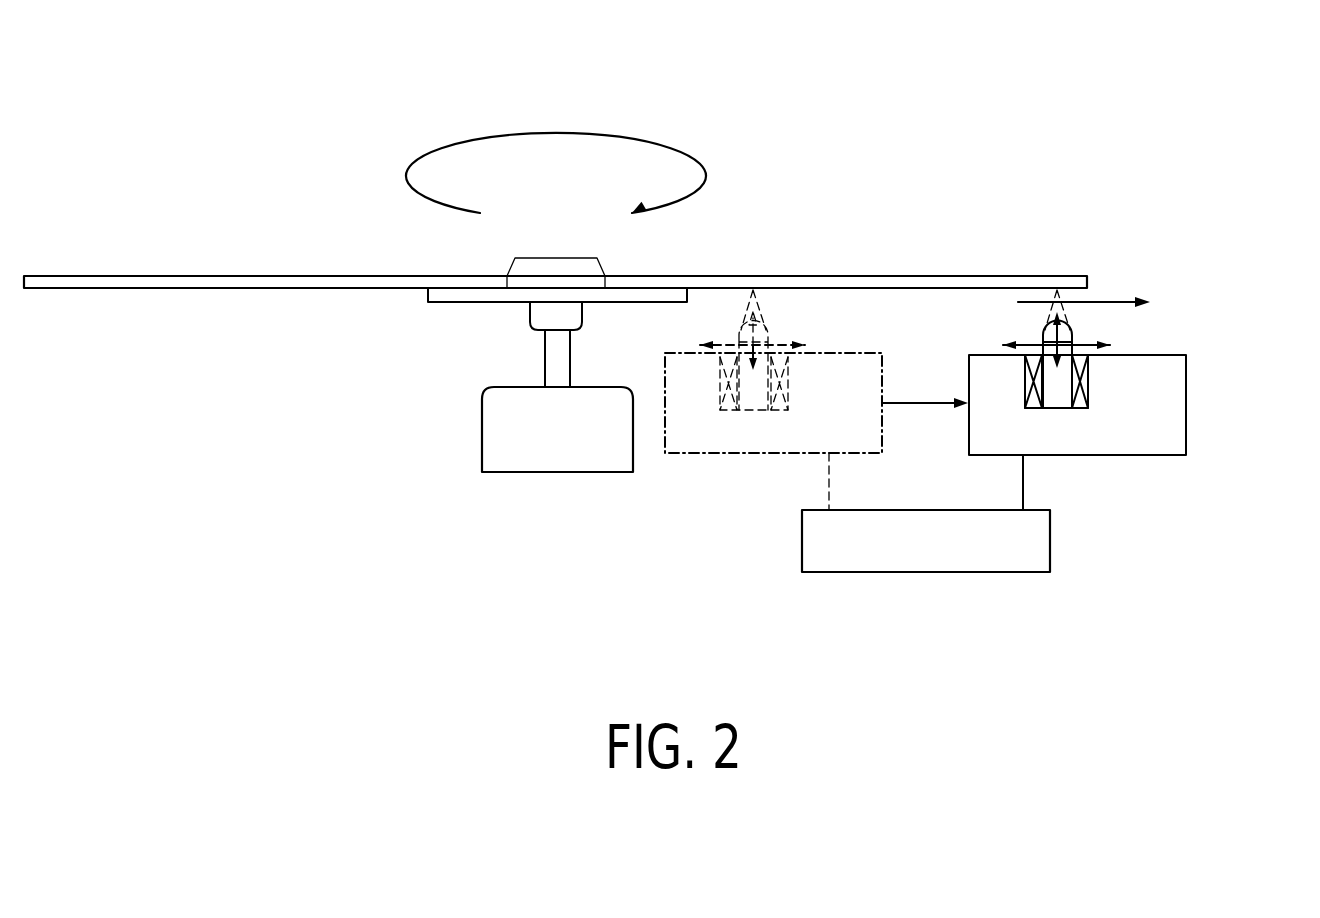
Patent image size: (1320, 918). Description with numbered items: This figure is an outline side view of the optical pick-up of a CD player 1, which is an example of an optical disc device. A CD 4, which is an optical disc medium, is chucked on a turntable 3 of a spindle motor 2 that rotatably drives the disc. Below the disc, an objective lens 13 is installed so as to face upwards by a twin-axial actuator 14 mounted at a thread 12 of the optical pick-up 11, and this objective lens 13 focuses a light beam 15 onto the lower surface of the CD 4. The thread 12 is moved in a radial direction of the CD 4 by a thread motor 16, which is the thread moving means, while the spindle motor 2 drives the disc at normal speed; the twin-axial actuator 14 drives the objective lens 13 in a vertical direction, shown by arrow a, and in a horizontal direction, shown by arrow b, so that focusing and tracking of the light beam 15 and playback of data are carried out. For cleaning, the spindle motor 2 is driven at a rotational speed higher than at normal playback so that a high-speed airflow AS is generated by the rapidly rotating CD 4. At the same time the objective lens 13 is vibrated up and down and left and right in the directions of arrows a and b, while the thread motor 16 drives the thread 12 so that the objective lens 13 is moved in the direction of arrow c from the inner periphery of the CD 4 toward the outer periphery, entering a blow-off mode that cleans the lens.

The CD player 1 is at (256, 182).
The spindle motor 2 is at (530, 450).
The turntable 3 is at (445, 297).
The CD 4 is at (942, 274).
The optical pick-up 11 is at (1180, 470).
The thread 12 is at (847, 428).
The objective lens 13 is at (745, 325).
The twin-axial actuator 14 is at (780, 383).
The light beam 15 is at (745, 318).
The thread motor 16 is at (928, 555).
The high-speed airflow AS is at (1135, 303).
The arrow a is at (748, 367).
The arrow b is at (713, 348).
The arrow c is at (935, 410).